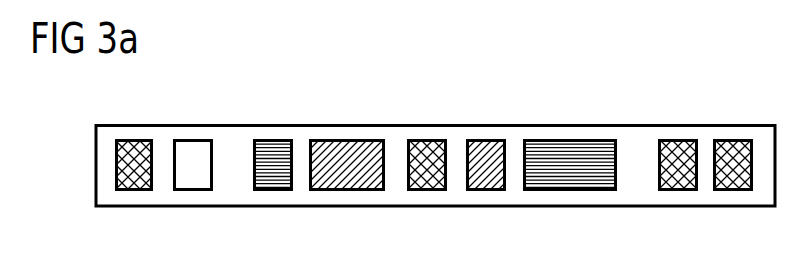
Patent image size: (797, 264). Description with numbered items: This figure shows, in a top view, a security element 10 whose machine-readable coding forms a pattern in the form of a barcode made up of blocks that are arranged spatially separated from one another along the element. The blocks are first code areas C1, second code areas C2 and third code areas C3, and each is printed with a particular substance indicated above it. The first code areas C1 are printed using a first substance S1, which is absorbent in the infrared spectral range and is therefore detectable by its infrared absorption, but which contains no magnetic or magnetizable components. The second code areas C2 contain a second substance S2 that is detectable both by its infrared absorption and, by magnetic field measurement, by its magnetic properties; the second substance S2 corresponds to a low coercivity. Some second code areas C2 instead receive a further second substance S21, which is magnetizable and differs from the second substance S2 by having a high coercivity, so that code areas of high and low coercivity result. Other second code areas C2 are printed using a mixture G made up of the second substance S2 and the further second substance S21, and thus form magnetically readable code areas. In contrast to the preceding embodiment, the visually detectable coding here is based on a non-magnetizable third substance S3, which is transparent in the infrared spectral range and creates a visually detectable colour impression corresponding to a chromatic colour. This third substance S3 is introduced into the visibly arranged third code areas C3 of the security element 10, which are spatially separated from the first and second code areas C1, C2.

The security element 10 is at (95, 163).
The second substance S2 is at (132, 139).
The further second substance S21 is at (190, 139).
The third substance S3 is at (272, 139).
The mixture G is at (347, 139).
The first substance S1 is at (425, 139).
The first code areas C1 is at (432, 183).
The second code areas C2 is at (137, 183).
The third code areas C3 is at (273, 183).